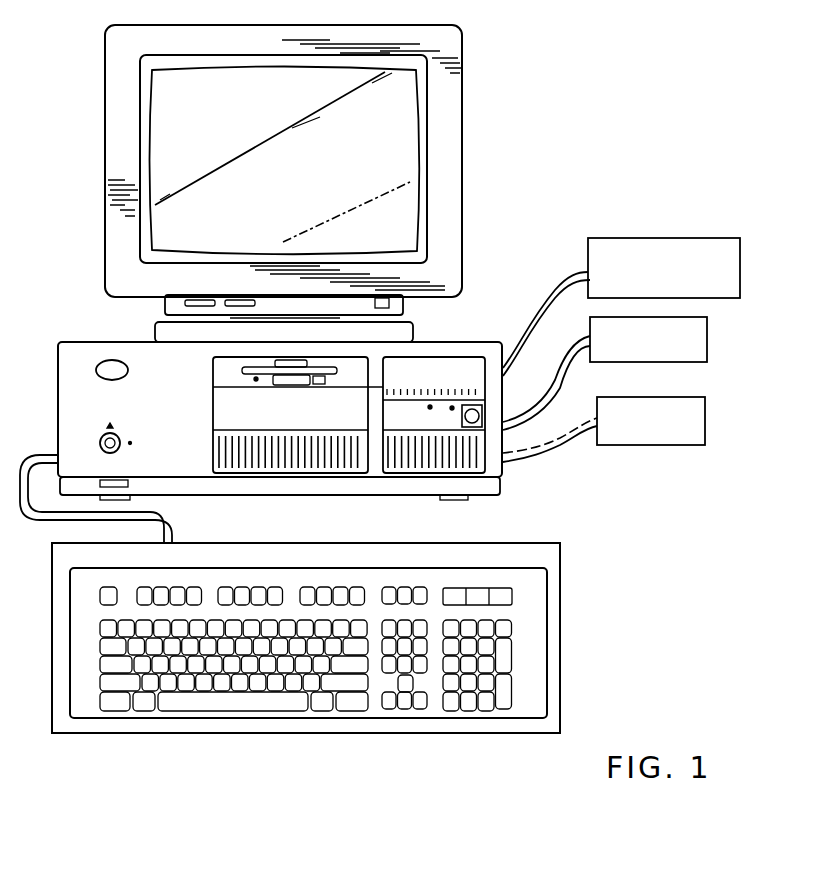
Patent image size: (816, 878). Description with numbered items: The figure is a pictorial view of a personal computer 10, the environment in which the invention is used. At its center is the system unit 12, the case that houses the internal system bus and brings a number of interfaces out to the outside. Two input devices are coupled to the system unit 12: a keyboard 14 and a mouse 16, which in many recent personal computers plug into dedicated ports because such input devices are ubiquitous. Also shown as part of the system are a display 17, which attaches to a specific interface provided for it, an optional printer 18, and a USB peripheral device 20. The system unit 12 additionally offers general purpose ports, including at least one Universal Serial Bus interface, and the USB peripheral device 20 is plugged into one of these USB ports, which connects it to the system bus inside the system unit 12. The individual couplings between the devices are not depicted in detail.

The personal computer 10 is at (305, 803).
The system unit 12 is at (475, 342).
The keyboard 14 is at (528, 543).
The mouse 16 is at (705, 435).
The display 17 is at (462, 192).
The printer 18 is at (707, 357).
The USB peripheral device 20 is at (740, 285).